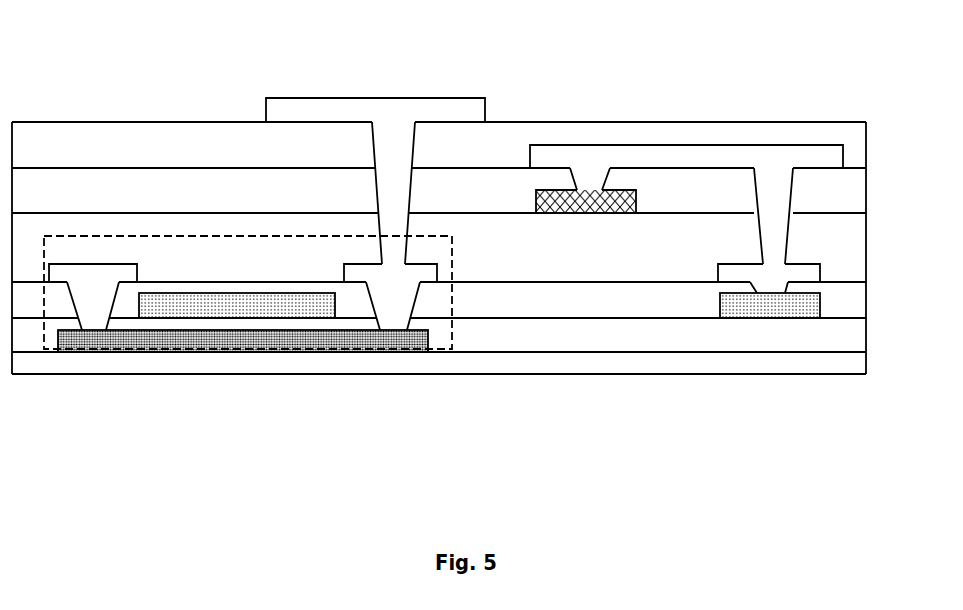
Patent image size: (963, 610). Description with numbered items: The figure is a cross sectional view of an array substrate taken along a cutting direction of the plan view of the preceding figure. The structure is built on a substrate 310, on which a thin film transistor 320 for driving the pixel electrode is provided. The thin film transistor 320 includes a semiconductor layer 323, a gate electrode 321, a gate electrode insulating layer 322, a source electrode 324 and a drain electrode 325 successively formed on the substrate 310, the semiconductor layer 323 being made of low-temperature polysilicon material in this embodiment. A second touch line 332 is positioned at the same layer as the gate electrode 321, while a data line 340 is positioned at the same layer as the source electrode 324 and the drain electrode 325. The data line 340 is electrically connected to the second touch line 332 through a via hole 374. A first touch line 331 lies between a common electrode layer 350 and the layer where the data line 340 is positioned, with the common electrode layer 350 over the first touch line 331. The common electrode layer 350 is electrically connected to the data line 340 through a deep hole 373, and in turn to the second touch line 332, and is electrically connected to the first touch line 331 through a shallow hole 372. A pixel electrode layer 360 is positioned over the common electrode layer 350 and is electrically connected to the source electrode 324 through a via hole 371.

The substrate 310 is at (575, 365).
The thin film transistor 320 is at (453, 330).
The gate electrode 321 is at (170, 308).
The gate electrode insulating layer 322 is at (340, 295).
The semiconductor layer 323 is at (248, 352).
The source electrode 324 is at (417, 272).
The drain electrode 325 is at (93, 273).
The first touch line 331 is at (550, 197).
The second touch line 332 is at (775, 307).
The data line 340 is at (795, 274).
The common electrode layer 350 is at (635, 155).
The pixel electrode layer 360 is at (303, 113).
The via hole 371 is at (405, 145).
The shallow hole 372 is at (590, 177).
The deep hole 373 is at (773, 205).
The via hole 374 is at (775, 286).